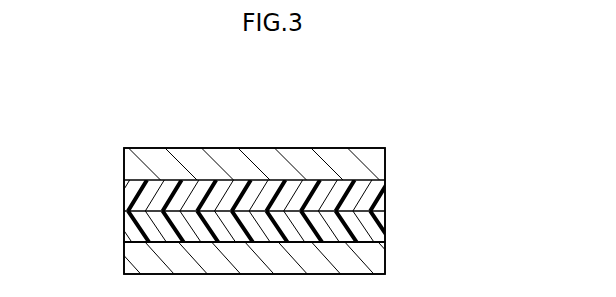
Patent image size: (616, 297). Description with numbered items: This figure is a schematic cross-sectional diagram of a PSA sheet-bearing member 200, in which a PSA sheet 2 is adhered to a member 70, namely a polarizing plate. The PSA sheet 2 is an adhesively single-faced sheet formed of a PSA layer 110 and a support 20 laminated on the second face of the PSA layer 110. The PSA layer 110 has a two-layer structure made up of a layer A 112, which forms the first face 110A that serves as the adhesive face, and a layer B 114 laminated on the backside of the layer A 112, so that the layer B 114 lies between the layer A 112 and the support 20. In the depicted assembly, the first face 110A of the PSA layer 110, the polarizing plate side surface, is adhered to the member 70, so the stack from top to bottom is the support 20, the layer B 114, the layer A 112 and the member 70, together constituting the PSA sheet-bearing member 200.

The PSA sheet-bearing member 200 is at (370, 107).
The PSA sheet 2 is at (553, 138).
The support 20 is at (385, 162).
The PSA layer 110 is at (483, 178).
The layer B 114 is at (385, 188).
The layer A 112 is at (385, 220).
The first face 110A is at (148, 243).
The member 70 is at (385, 255).